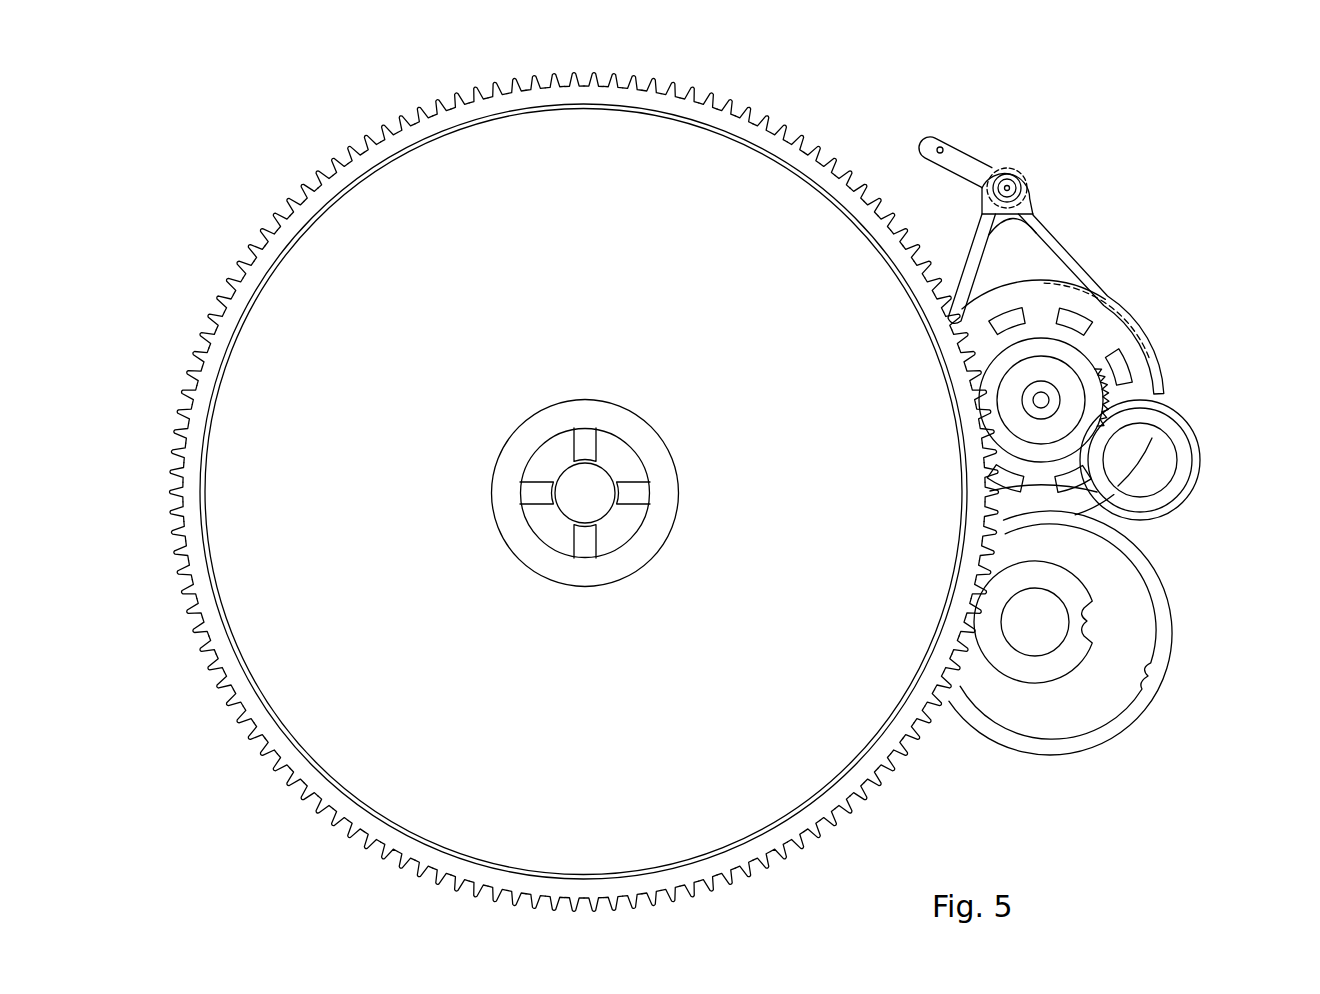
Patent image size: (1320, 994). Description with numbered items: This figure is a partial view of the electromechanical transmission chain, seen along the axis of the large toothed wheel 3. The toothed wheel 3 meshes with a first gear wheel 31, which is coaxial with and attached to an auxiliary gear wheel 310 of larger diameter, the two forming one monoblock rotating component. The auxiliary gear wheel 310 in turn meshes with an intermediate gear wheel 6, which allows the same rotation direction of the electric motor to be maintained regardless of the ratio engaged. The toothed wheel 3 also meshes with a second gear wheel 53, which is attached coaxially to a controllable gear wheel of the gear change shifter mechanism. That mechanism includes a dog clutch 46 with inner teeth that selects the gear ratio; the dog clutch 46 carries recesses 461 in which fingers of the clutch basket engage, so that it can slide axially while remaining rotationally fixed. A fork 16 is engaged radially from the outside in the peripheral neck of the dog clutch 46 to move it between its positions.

The toothed wheel 3 is at (723, 118).
The fork 16 is at (1038, 222).
The dog clutch 46 is at (1075, 300).
The recesses 461 is at (1117, 358).
The second gear wheel 53 is at (982, 402).
The intermediate gear wheel 6 is at (1165, 500).
The first gear wheel 31 is at (1050, 668).
The auxiliary gear wheel 310 is at (1147, 668).